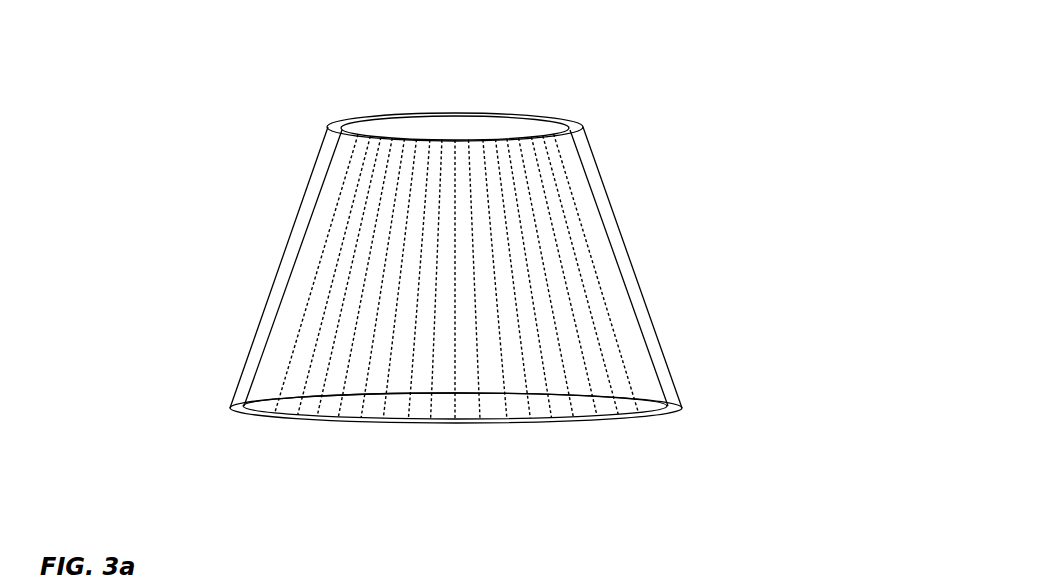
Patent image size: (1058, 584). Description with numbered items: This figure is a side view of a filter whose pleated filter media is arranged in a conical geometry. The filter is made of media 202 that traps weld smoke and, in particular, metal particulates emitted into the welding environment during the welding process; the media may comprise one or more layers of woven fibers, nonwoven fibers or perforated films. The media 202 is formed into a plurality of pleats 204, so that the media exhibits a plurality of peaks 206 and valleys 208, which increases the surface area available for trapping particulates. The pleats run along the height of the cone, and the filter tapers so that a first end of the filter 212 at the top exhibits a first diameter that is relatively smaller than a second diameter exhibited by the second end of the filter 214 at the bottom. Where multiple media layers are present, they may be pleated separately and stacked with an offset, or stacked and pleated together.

The media 202 is at (397, 220).
The pleats 204 is at (635, 250).
The peaks 206 is at (656, 275).
The valleys 208 is at (534, 273).
The first end of the filter 212 is at (475, 78).
The second end of the filter 214 is at (402, 445).